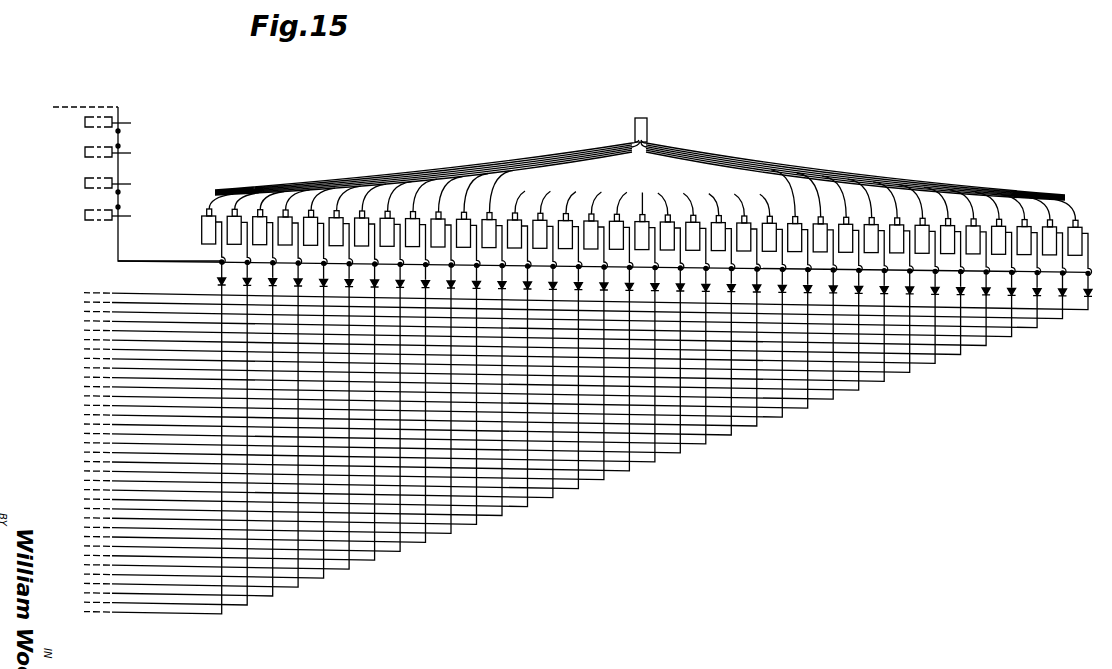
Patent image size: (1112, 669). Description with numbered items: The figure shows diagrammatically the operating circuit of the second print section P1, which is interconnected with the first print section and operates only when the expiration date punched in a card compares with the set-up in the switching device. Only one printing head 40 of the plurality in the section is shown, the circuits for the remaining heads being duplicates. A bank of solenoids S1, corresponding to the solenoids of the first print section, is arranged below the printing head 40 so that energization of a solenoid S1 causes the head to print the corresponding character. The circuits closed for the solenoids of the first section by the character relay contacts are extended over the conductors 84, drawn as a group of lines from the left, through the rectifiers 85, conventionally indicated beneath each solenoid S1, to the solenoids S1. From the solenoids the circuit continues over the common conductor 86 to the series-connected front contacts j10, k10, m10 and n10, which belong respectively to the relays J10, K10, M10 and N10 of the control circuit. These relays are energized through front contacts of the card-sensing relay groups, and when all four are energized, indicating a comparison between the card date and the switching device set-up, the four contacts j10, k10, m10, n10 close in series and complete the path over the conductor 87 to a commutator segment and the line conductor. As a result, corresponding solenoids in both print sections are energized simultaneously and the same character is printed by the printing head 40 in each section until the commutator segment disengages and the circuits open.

The print section P1 is at (505, 128).
The solenoid S1 is at (196, 226).
The printing head 40 is at (648, 132).
The conductors 84 is at (118, 359).
The rectifiers 85 is at (240, 278).
The common conductor 86 is at (137, 260).
The conductor 87 is at (116, 106).
The relay J10 is at (84, 122).
The relay K10 is at (84, 152).
The relay M10 is at (84, 183).
The relay N10 is at (84, 215).
The front contact j10 is at (132, 124).
The front contact k10 is at (134, 152).
The front contact m10 is at (136, 185).
The front contact n10 is at (134, 214).